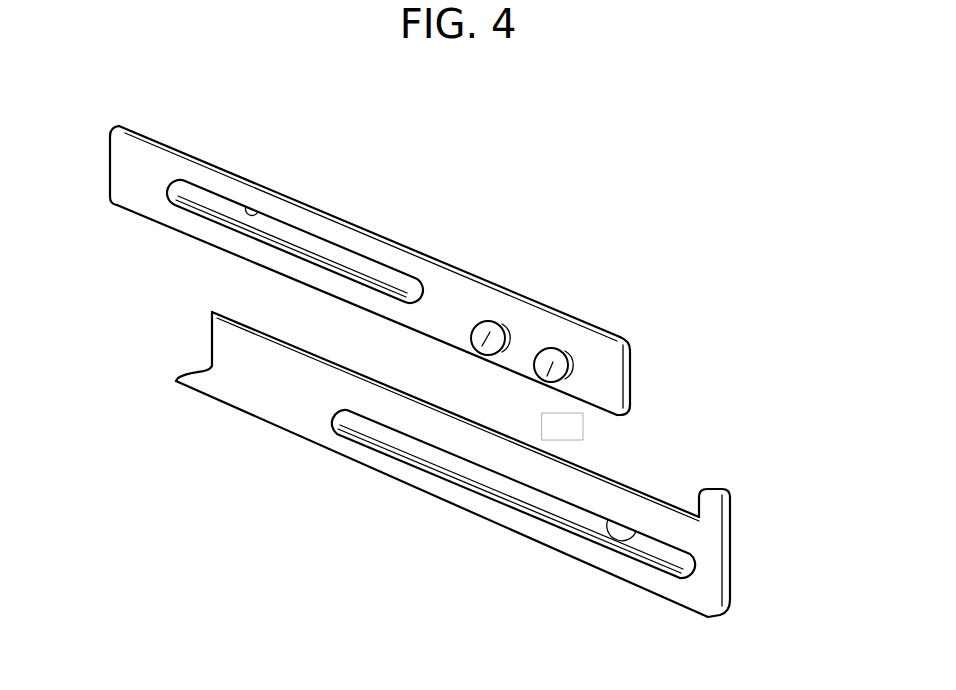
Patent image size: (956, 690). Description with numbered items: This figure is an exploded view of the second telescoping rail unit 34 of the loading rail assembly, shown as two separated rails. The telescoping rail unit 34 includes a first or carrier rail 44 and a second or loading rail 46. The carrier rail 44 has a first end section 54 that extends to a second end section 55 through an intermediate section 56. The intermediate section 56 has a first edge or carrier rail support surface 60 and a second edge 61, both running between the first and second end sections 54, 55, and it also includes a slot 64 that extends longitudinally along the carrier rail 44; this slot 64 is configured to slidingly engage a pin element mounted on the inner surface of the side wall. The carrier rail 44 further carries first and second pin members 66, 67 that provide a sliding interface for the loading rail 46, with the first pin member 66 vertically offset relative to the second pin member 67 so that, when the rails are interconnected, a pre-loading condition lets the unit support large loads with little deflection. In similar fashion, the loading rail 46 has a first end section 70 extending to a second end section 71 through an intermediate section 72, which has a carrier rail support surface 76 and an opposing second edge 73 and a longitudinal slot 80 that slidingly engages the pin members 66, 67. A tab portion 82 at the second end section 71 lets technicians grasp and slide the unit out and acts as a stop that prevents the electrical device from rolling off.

The second telescoping rail unit 34 is at (439, 345).
The carrier rail 44 is at (385, 242).
The loading rail 46 is at (466, 468).
The first end section 54 is at (114, 134).
The second end section 55 is at (633, 366).
The intermediate section 56 is at (267, 256).
The carrier rail support surface 60 is at (160, 138).
The second edge 61 is at (131, 213).
The slot 64 is at (262, 213).
The first pin member 66 is at (478, 352).
The second pin member 67 is at (552, 375).
The first end section 70 is at (212, 313).
The second end section 71 is at (735, 605).
The intermediate section 72 is at (590, 487).
The second edge 73 is at (289, 343).
The carrier rail support surface 76 is at (360, 468).
The slot 80 is at (628, 520).
The tab portion 82 is at (718, 500).